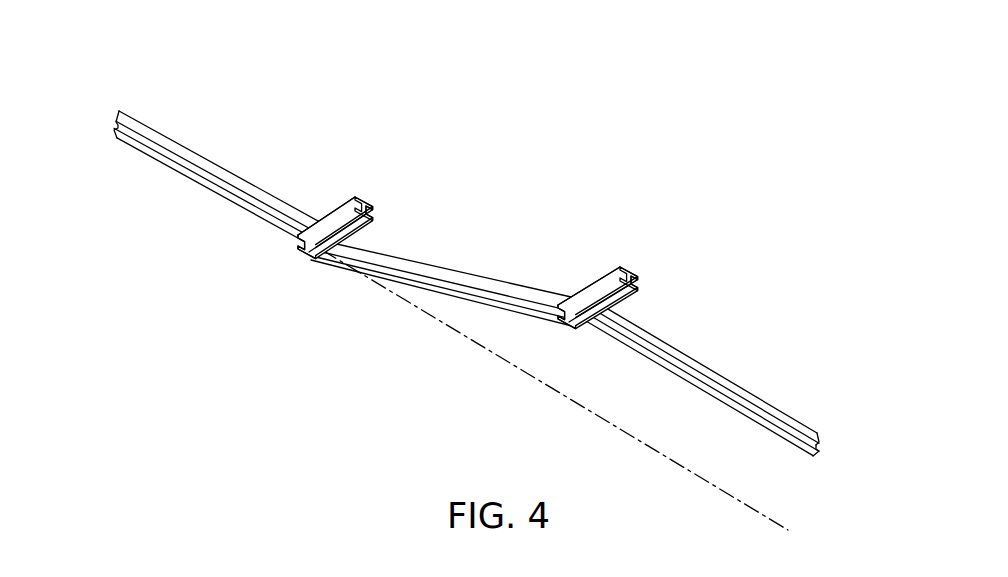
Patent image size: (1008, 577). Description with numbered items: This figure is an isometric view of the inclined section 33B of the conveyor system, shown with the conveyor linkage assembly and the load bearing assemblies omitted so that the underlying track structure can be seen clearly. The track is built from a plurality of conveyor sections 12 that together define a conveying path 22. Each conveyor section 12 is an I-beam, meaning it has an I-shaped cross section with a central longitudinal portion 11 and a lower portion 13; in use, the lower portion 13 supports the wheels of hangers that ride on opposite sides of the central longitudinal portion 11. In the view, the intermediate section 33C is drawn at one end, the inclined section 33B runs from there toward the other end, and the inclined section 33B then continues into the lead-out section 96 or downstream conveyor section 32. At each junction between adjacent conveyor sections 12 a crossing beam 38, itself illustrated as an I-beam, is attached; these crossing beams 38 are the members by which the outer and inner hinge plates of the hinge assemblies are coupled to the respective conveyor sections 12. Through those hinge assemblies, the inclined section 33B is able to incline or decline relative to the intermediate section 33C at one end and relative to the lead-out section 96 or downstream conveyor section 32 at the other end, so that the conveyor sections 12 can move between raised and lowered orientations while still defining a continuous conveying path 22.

The conveyor section 12 is at (99, 91).
The conveying path 22 is at (152, 156).
The intermediate section 33C is at (213, 163).
The inclined section 33B is at (476, 272).
The downstream conveyor section 32 is at (724, 395).
The lead-out section 96 is at (721, 373).
The crossing beam 38 is at (357, 195).
The central longitudinal portion 11 is at (819, 436).
The lower portion 13 is at (816, 456).